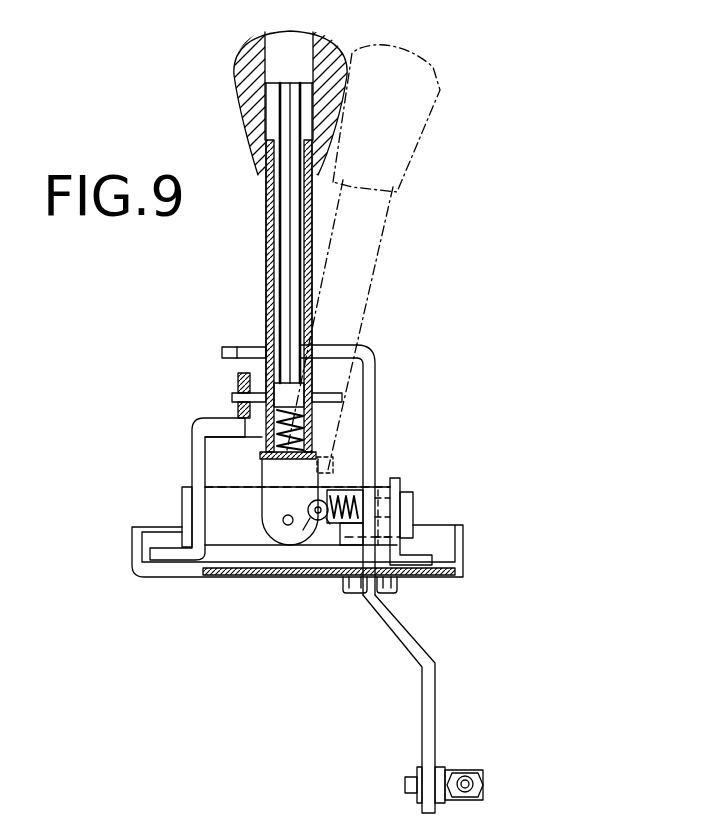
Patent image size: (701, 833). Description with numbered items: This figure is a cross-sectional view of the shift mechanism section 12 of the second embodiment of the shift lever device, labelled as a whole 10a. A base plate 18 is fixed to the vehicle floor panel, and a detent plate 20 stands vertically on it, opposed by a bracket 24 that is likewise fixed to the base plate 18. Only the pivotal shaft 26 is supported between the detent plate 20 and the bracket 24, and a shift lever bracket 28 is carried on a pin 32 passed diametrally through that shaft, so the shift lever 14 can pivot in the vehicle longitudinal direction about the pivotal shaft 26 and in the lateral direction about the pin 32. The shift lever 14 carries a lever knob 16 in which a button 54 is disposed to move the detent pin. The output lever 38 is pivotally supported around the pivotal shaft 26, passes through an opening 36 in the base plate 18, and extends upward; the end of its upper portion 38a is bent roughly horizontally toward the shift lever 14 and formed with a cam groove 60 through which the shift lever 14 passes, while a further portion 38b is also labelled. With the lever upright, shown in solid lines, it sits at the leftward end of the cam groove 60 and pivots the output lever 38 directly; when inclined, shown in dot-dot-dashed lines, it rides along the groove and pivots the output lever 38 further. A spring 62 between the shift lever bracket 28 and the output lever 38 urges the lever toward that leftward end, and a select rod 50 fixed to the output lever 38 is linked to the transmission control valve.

The shift lever device 10a is at (530, 287).
The shift mechanism section 12 is at (390, 393).
The shift lever 14 is at (312, 217).
The lever knob 16 is at (350, 82).
The base plate 18 is at (142, 570).
The detent plate 20 is at (198, 423).
The bracket 24 is at (397, 480).
The pivotal shaft 26 is at (232, 538).
The shift lever bracket 28 is at (275, 532).
The pin 32 is at (288, 525).
The opening 36 is at (365, 597).
The output lever 38 is at (437, 685).
The upper portion of the output lever 38a is at (377, 362).
The stop bar 38b is at (220, 352).
The select rod 50 is at (483, 780).
The button 54 is at (292, 44).
The cam groove 60 is at (330, 343).
The spring 62 is at (370, 477).